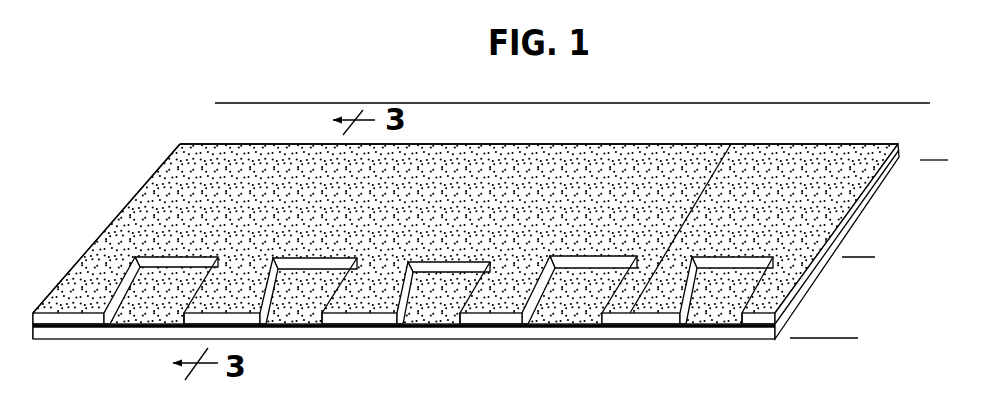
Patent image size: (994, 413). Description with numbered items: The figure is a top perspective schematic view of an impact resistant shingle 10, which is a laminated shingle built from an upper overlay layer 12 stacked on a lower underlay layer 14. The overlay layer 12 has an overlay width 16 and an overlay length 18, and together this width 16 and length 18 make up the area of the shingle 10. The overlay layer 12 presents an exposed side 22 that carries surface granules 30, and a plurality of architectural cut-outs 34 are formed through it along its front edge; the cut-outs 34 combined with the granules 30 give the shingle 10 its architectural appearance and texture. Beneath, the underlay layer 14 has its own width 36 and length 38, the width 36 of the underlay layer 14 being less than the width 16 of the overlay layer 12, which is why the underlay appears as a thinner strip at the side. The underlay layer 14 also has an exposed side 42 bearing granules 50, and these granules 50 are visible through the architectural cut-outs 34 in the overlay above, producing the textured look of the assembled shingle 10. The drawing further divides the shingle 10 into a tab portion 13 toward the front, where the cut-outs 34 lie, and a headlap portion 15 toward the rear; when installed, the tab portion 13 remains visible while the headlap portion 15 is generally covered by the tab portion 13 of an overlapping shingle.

The impact resistant shingle 10 is at (85, 141).
The upper (overlay) layer 12 is at (76, 282).
The tab portion 13 is at (676, 234).
The lower (underlay) layer 14 is at (377, 334).
The headlap portion 15 is at (731, 158).
The overlay width 16 is at (837, 333).
The overlay length 18 is at (940, 93).
The exposed side 22 is at (531, 164).
The surface granules 30 is at (413, 173).
The architectural cut-outs 34 is at (433, 312).
The width 36 is at (857, 262).
The length 38 is at (572, 90).
The exposed side 42 is at (291, 304).
The granules 50 is at (153, 306).